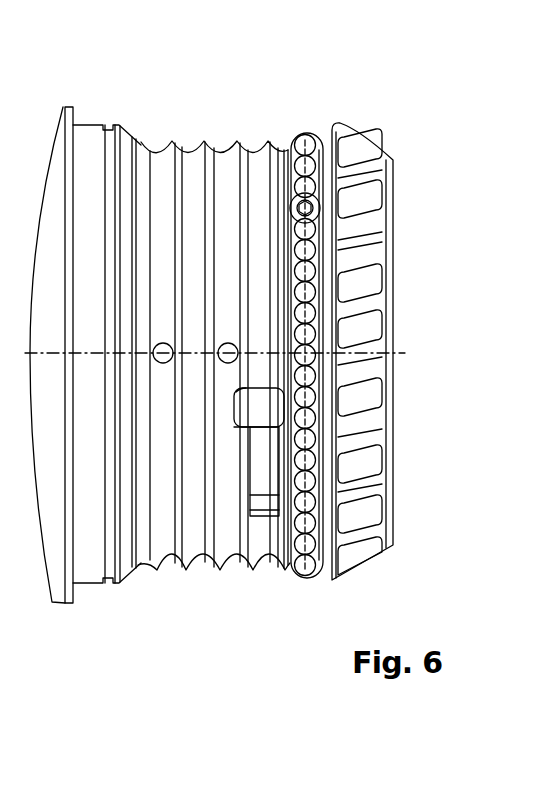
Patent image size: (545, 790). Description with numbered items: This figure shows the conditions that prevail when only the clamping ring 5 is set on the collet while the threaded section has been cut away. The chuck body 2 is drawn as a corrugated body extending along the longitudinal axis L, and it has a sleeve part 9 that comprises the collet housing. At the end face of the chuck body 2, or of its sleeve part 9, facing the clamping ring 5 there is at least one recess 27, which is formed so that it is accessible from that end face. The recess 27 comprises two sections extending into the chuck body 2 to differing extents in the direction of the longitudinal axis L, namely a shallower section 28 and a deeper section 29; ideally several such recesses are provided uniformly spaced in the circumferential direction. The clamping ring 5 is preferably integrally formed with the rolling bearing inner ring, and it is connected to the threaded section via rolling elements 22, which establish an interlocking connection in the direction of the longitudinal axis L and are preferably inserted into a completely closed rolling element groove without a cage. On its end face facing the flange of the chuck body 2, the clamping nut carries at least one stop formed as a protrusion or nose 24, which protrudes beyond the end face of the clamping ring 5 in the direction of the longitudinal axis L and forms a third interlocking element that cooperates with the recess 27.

The chuck body 2 is at (143, 573).
The clamping ring 5 is at (363, 185).
The sleeve part 9 is at (393, 196).
The rolling elements 22 is at (305, 133).
The nose 24 is at (255, 402).
The recess 27 is at (233, 425).
The shallower section 28 is at (263, 480).
The deeper section 29 is at (233, 404).
The longitudinal axis L is at (385, 355).